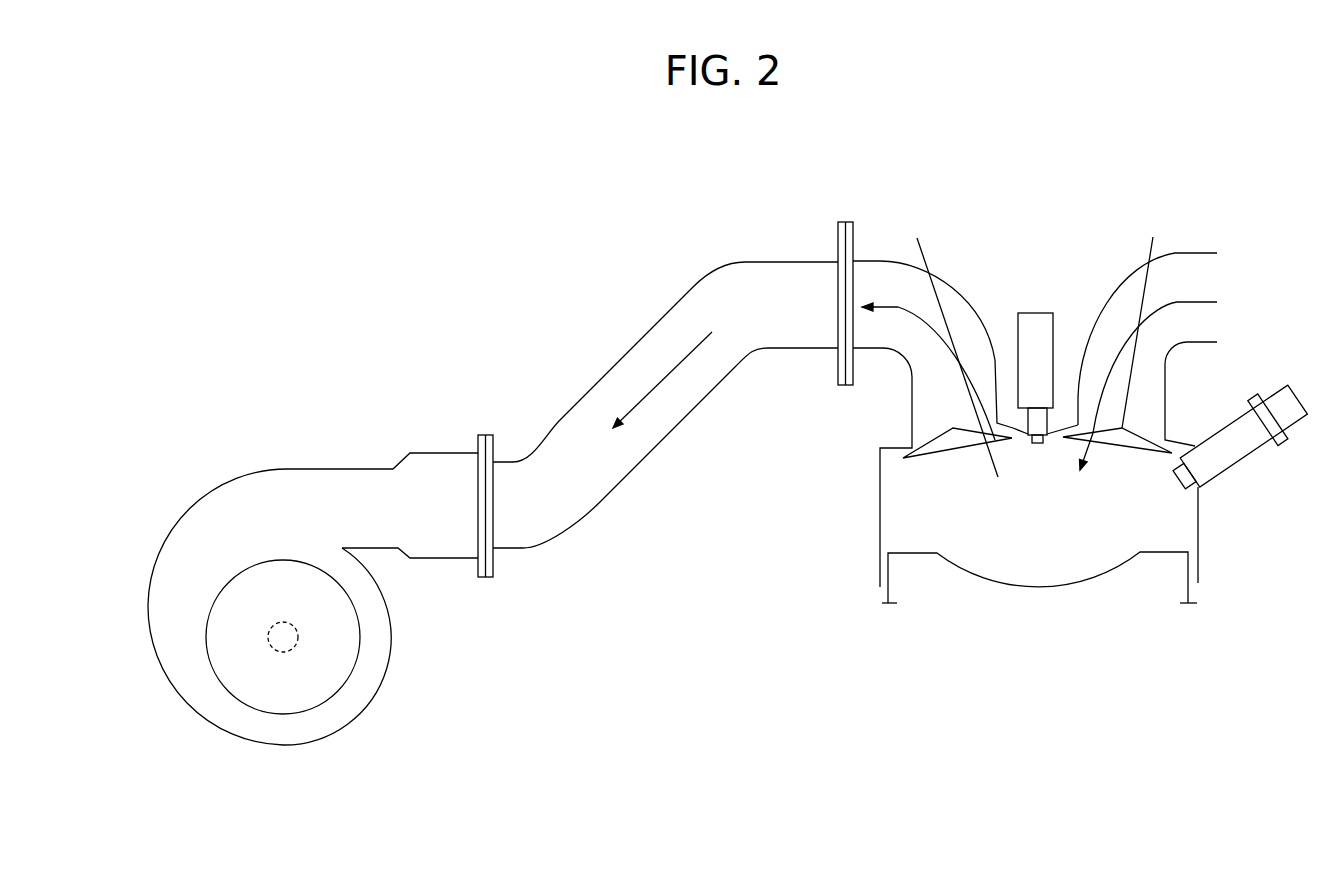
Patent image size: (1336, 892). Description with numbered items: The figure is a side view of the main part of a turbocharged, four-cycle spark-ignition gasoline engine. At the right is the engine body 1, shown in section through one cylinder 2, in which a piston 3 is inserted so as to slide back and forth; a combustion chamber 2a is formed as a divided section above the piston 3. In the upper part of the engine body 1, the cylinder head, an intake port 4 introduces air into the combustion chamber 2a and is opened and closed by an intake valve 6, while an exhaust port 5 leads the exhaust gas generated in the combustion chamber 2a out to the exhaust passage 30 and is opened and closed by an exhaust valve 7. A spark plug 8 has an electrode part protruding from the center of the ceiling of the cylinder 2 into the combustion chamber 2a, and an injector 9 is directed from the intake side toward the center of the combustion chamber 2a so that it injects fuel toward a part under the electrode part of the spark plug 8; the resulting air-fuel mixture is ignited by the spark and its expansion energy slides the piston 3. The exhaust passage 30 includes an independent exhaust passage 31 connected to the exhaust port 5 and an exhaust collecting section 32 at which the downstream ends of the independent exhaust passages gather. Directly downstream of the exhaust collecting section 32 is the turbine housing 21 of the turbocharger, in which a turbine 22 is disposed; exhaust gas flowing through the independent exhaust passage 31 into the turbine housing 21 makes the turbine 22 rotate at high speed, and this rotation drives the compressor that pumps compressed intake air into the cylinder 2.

The engine body 1 is at (1081, 369).
The cylinder 2 is at (1200, 508).
The combustion chamber 2a is at (1030, 532).
The piston 3 is at (900, 570).
The intake port 4 is at (1205, 343).
The exhaust port 5 is at (948, 280).
The intake valve 6 is at (1153, 245).
The exhaust valve 7 is at (923, 253).
The spark plug 8 is at (1033, 313).
The injector 9 is at (1292, 407).
The turbine housing 21 is at (170, 615).
The turbine 22 is at (320, 670).
The exhaust passage 30 is at (624, 387).
The independent exhaust passage 31 is at (687, 292).
The exhaust collecting section 32 is at (448, 467).